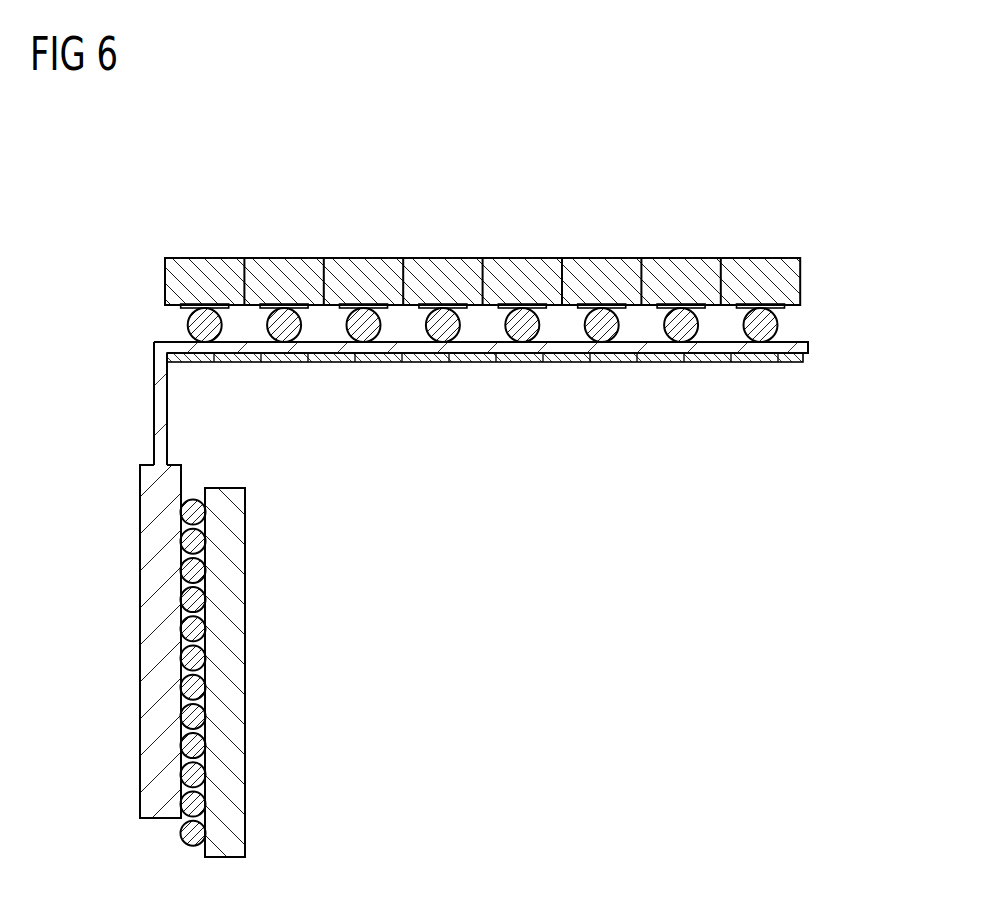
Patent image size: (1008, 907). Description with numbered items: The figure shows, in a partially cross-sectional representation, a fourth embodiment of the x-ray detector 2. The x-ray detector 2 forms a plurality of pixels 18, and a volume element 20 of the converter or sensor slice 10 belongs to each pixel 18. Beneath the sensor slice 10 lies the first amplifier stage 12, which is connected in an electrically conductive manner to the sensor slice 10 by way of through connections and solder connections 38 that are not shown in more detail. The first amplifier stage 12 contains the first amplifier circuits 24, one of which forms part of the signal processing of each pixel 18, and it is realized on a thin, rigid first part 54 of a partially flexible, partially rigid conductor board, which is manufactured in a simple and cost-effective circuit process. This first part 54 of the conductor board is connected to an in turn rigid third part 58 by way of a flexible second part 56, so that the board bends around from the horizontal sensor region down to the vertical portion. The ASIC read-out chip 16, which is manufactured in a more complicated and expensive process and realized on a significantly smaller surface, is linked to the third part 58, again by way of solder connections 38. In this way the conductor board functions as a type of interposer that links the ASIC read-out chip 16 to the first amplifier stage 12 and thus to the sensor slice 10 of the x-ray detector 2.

The x-ray detector 2 is at (203, 128).
The sensor slice 10 is at (490, 516).
The first amplifier stage 12 is at (460, 392).
The ASIC read-out chip 16 is at (235, 610).
The pixel 18 is at (199, 228).
The volume element 20 is at (165, 273).
The first amplifier circuit 24 is at (210, 363).
The solder connections 38 is at (188, 325).
The first part of the conductor board 54 is at (828, 342).
The second part of the conductor board 56 is at (142, 412).
The third part of the conductor board 58 is at (128, 612).